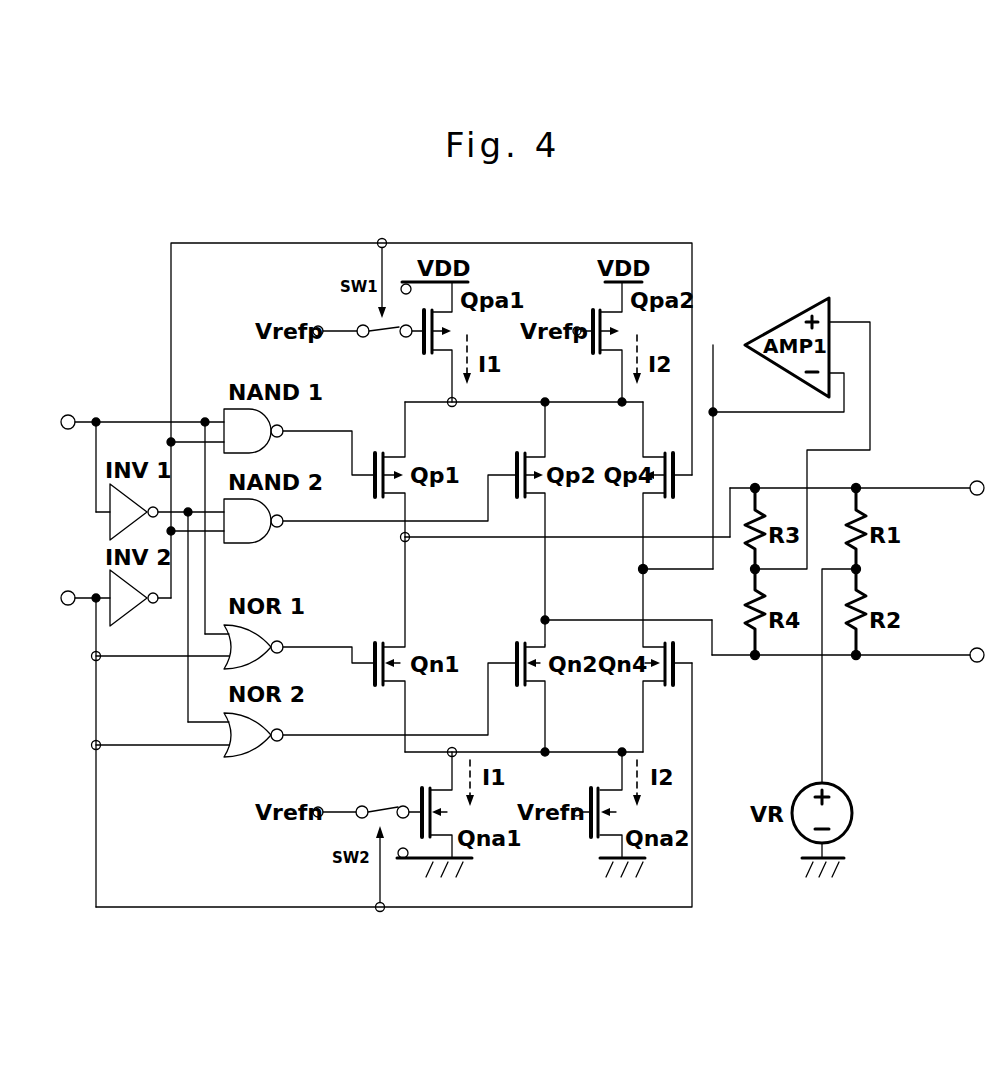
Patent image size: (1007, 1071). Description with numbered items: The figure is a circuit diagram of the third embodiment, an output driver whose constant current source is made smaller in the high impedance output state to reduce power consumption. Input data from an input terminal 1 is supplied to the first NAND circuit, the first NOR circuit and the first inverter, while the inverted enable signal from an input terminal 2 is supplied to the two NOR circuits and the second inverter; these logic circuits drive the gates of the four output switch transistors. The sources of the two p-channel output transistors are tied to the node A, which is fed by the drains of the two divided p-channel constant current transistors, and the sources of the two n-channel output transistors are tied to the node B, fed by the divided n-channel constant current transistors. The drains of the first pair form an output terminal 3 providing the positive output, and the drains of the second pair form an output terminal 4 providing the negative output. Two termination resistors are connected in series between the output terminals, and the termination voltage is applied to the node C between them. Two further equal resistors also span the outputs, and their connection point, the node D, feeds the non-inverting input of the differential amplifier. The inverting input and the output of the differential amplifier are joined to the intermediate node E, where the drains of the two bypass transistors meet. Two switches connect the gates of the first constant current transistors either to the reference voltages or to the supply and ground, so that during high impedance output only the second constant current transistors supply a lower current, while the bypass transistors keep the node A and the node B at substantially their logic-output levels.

The input terminal 1 is at (70, 407).
The input terminal 2 is at (68, 615).
The output terminal 3 is at (978, 472).
The output terminal 4 is at (976, 680).
The node A is at (671, 388).
The node B is at (668, 750).
The node C is at (875, 567).
The node D is at (738, 571).
The intermediate node E is at (628, 566).